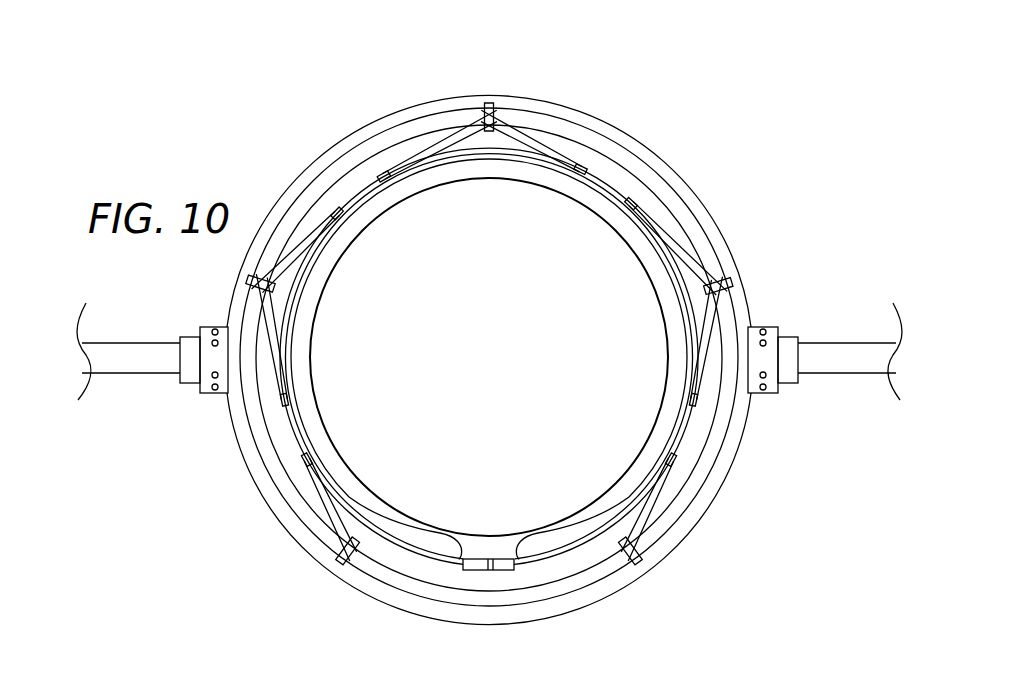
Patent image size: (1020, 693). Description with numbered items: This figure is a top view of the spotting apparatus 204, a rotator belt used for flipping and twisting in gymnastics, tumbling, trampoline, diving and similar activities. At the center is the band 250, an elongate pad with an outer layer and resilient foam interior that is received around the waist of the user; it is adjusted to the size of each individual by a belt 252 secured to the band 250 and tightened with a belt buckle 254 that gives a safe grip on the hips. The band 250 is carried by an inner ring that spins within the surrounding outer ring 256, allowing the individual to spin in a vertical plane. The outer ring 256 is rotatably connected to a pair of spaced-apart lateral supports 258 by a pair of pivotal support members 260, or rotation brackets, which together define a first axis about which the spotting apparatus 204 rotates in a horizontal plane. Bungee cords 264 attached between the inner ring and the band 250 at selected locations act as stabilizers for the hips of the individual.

The spotting apparatus 204 is at (570, 53).
The band 250 is at (637, 235).
The belt 252 is at (462, 563).
The belt buckle 254 is at (500, 567).
The outer ring 256 is at (718, 247).
The lateral supports 258 is at (130, 365).
The pivotal support members 260 is at (205, 395).
The bungee cords 264 is at (302, 245).